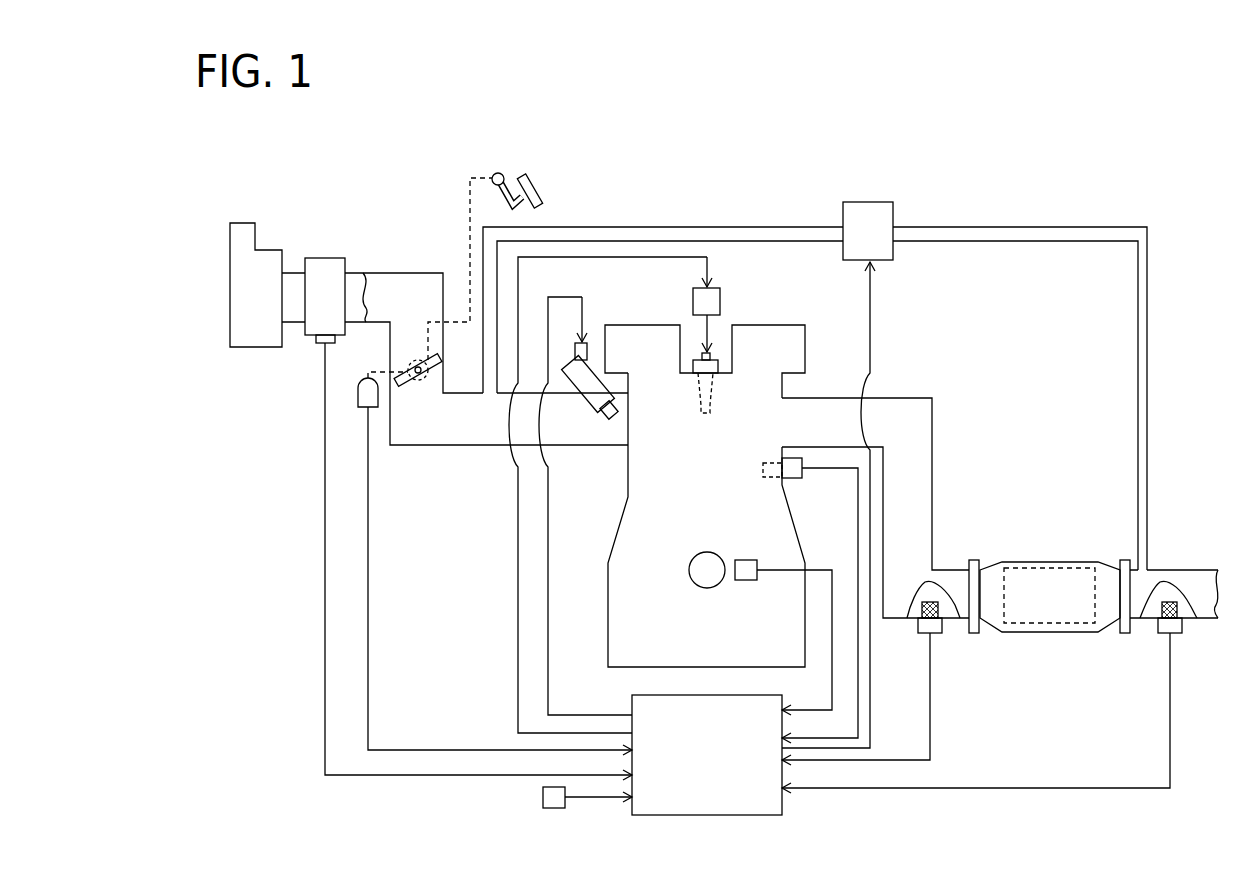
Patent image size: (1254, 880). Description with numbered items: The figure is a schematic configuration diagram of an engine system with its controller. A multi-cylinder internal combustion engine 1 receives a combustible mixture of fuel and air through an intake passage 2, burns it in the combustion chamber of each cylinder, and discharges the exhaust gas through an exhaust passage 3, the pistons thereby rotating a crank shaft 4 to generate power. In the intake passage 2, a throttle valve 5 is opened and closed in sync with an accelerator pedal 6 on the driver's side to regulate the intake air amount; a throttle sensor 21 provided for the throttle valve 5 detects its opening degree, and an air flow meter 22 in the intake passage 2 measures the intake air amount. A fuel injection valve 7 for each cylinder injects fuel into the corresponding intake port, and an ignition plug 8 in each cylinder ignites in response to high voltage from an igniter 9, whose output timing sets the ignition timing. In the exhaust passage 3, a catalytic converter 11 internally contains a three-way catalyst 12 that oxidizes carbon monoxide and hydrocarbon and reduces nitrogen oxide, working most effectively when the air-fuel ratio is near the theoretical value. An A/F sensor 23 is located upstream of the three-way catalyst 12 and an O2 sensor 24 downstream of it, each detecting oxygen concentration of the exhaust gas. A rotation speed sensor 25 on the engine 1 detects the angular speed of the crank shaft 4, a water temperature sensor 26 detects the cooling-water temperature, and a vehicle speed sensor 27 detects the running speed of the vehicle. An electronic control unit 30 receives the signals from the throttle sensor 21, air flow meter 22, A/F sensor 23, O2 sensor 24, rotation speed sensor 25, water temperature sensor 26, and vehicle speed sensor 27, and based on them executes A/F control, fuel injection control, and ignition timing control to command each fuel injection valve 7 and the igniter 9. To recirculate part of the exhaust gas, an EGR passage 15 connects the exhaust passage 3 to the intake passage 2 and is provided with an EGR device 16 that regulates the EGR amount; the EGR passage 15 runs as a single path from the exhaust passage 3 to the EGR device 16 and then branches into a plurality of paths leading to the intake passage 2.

The internal combustion engine 1 is at (810, 324).
The intake passage 2 is at (385, 278).
The exhaust passage 3 is at (892, 418).
The crank shaft 4 is at (702, 574).
The throttle valve 5 is at (413, 390).
The accelerator pedal 6 is at (540, 188).
The fuel injection valve 7 is at (565, 368).
The ignition plug 8 is at (719, 362).
The igniter 9 is at (721, 290).
The catalytic converter 11 is at (1012, 560).
The three-way catalyst 12 is at (1055, 572).
The EGR passage 15 is at (1020, 228).
The EGR device 16 is at (872, 212).
The throttle sensor 21 is at (359, 392).
The air flow meter 22 is at (325, 268).
The A/F sensor 23 is at (922, 625).
The O2 sensor 24 is at (1158, 627).
The rotation speed sensor 25 is at (758, 566).
The water temperature sensor 26 is at (793, 479).
The vehicle speed sensor 27 is at (543, 797).
The electronic control unit 30 is at (640, 702).